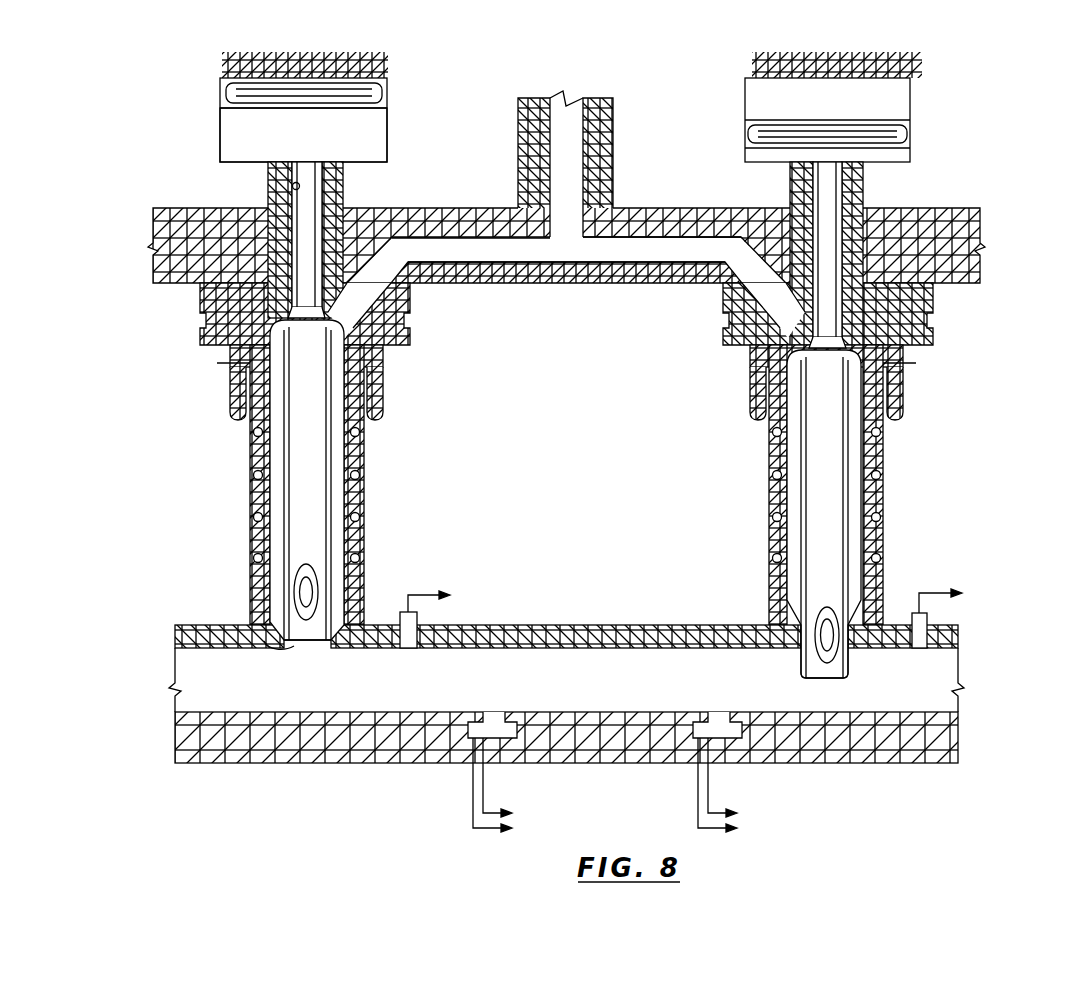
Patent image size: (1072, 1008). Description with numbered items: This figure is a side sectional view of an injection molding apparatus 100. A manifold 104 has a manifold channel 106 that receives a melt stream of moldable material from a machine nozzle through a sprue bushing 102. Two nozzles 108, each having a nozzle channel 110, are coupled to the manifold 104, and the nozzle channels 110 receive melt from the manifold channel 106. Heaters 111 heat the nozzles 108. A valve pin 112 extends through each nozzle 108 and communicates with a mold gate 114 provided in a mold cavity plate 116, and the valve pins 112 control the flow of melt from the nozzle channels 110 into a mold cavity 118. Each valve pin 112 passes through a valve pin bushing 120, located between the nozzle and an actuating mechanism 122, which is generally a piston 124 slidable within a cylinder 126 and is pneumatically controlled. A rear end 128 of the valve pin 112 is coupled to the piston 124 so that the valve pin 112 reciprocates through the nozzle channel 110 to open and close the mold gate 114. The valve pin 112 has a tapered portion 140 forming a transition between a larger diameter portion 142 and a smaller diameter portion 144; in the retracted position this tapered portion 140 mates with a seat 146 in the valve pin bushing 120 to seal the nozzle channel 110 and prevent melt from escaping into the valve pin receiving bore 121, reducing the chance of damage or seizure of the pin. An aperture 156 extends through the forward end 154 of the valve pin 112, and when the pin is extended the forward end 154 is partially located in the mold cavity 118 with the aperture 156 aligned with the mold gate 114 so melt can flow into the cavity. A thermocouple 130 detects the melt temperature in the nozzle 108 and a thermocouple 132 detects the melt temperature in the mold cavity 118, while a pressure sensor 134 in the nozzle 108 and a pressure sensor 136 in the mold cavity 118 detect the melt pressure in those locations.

The injection molding apparatus 100 is at (660, 90).
The sprue bushing 102 is at (604, 133).
The manifold 104 is at (684, 222).
The manifold channel 106 is at (617, 248).
The nozzle 108 is at (356, 456).
The nozzle channel 110 is at (337, 555).
The heater 111 is at (252, 515).
The valve pin 112 is at (303, 452).
The mold gate 114 is at (260, 625).
The mold cavity plate 116 is at (530, 628).
The mold cavity 118 is at (578, 689).
The valve pin bushing 120 is at (328, 188).
The valve pin receiving bore 121 is at (293, 187).
The actuating mechanism 122 is at (216, 117).
The piston 124 is at (378, 86).
The cylinder 126 is at (377, 125).
The rear end 128 is at (302, 132).
The thermocouple 130 is at (783, 412).
The thermocouple 132 is at (930, 619).
The pressure sensor 134 is at (875, 493).
The pressure sensor 136 is at (723, 712).
The tapered portion 140 is at (838, 350).
The larger diameter portion 142 is at (838, 528).
The smaller diameter portion 144 is at (827, 187).
The seat 146 is at (863, 333).
The forward end 154 is at (838, 658).
The aperture 156 is at (812, 633).